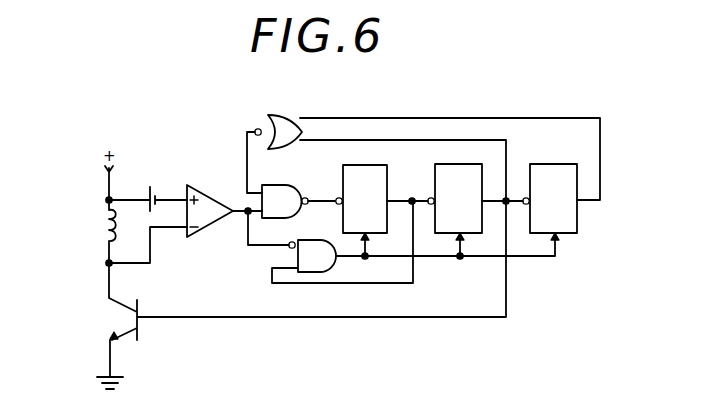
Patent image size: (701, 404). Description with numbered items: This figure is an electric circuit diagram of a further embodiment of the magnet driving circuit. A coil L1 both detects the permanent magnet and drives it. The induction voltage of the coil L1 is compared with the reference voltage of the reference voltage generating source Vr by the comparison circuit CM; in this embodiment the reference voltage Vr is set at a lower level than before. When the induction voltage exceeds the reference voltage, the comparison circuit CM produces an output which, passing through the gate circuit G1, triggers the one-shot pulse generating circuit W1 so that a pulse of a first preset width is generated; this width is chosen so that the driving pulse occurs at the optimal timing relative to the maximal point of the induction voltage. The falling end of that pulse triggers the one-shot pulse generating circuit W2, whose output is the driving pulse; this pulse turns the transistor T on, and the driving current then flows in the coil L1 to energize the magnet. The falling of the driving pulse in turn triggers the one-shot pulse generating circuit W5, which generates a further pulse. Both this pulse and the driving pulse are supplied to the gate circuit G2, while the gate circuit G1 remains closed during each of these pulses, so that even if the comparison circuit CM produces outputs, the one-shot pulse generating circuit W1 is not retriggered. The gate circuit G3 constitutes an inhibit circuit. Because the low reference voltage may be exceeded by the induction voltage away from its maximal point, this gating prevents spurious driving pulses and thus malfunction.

The coil L1 is at (100, 223).
The reference voltage generating source Vr is at (150, 188).
The comparator CM is at (205, 205).
The gate circuit G1 is at (285, 195).
The gate circuit G2 is at (294, 128).
The gate circuit G3 is at (318, 265).
The one-shot pulse generating circuit W1 is at (365, 174).
The one-shot pulse generating circuit W2 is at (447, 174).
The one-shot pulse generating circuit W5 is at (545, 174).
The transistor T is at (125, 335).